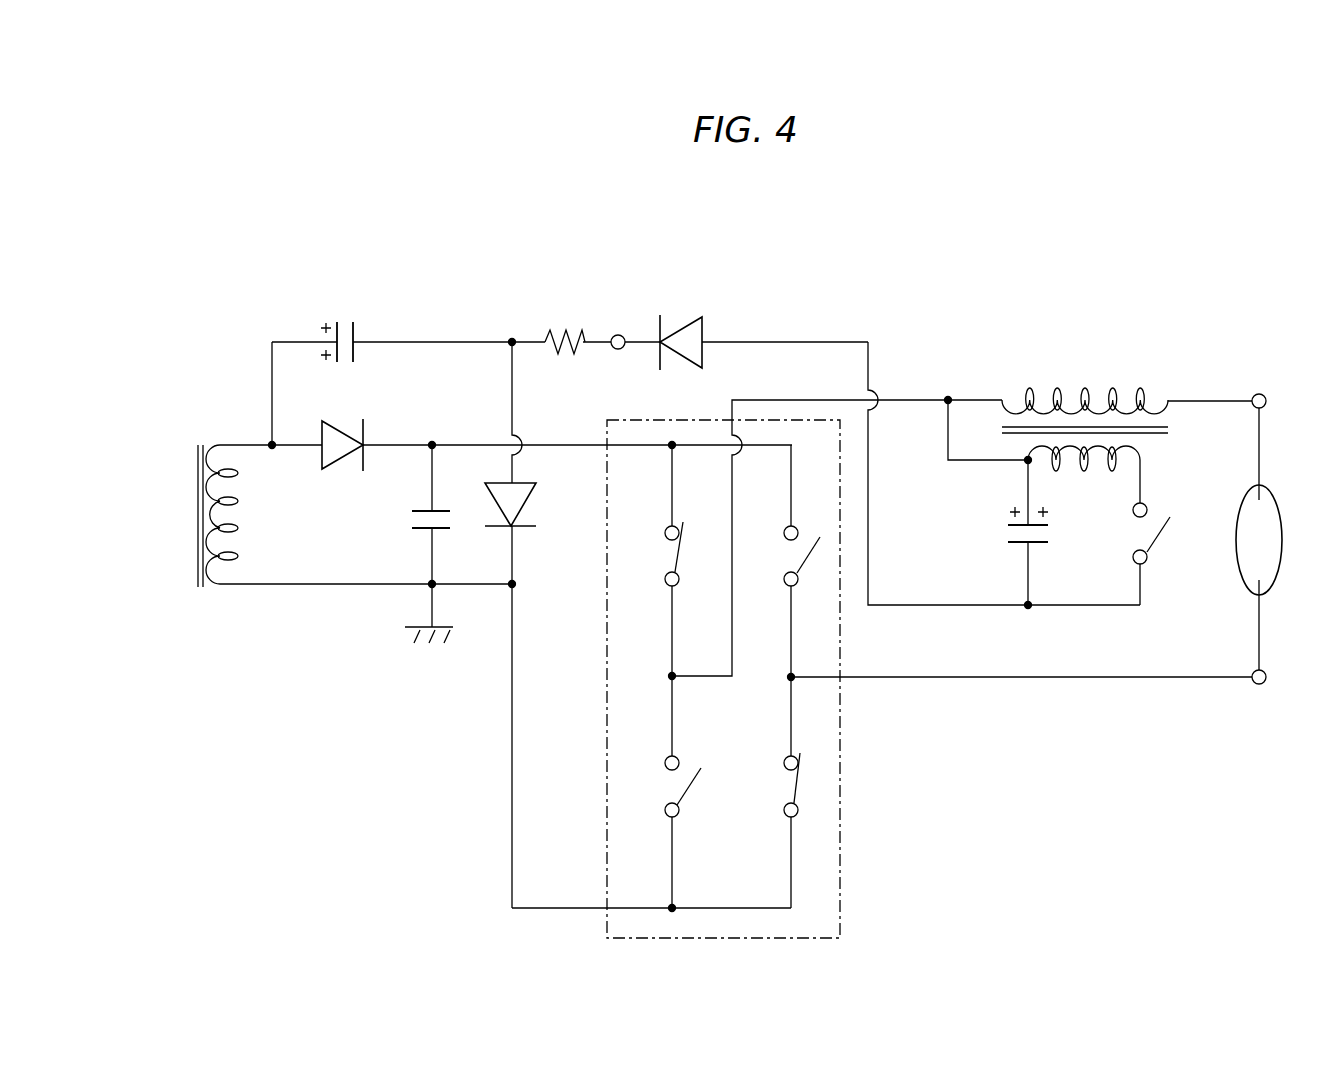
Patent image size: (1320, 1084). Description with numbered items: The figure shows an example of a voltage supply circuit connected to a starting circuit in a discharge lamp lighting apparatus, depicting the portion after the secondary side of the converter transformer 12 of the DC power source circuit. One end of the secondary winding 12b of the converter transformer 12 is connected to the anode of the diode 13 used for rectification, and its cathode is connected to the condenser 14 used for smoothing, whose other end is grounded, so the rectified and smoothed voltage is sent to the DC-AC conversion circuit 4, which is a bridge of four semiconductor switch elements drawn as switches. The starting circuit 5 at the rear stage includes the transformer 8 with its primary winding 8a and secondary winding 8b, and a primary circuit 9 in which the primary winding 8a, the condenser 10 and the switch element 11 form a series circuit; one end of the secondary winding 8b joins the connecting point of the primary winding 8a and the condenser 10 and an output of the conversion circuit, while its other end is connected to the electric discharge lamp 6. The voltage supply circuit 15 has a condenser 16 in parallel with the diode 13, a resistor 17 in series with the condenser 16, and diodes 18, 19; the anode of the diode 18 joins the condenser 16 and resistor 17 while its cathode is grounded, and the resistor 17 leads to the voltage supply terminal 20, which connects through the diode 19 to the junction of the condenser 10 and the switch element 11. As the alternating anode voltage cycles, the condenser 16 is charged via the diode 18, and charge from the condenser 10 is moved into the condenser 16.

The DC-AC conversion circuit 4 is at (670, 420).
The starting circuit 5 is at (973, 357).
The electric discharge lamp 6 is at (1276, 502).
The transformer 8 is at (1196, 382).
The primary winding 8a is at (1140, 447).
The secondary winding 8b is at (1087, 395).
The primary circuit 9 is at (1142, 624).
The condenser 10 is at (1018, 543).
The switch element 11 is at (1158, 538).
The converter transformer 12 is at (204, 606).
The secondary winding 12b is at (224, 447).
The diode 13 is at (336, 421).
The condenser 14 is at (412, 511).
The voltage supply circuit 15 is at (363, 264).
The condenser 16 is at (355, 335).
The resistor 17 is at (553, 335).
The diode 18 is at (533, 495).
The diode 19 is at (686, 320).
The voltage supply terminal 20 is at (614, 335).